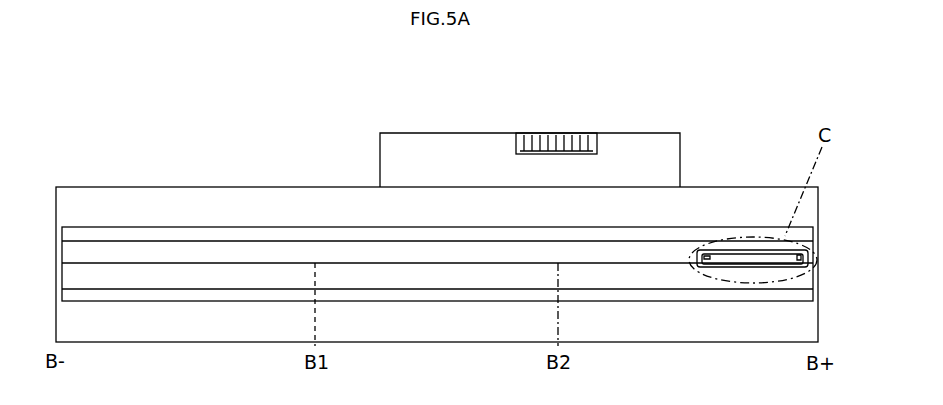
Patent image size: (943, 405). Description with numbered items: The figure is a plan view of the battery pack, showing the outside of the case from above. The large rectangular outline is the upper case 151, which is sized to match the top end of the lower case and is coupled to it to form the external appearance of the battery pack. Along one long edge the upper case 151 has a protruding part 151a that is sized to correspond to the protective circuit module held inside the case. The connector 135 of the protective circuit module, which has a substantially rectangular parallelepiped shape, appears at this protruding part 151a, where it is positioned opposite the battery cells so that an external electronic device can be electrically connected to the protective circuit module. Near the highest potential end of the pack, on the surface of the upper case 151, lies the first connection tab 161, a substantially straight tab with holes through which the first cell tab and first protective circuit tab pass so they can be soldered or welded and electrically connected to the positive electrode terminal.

The upper case 151 is at (227, 194).
The protruding part 151a is at (459, 140).
The connector 135 is at (555, 135).
The first connection tab 161 is at (754, 258).